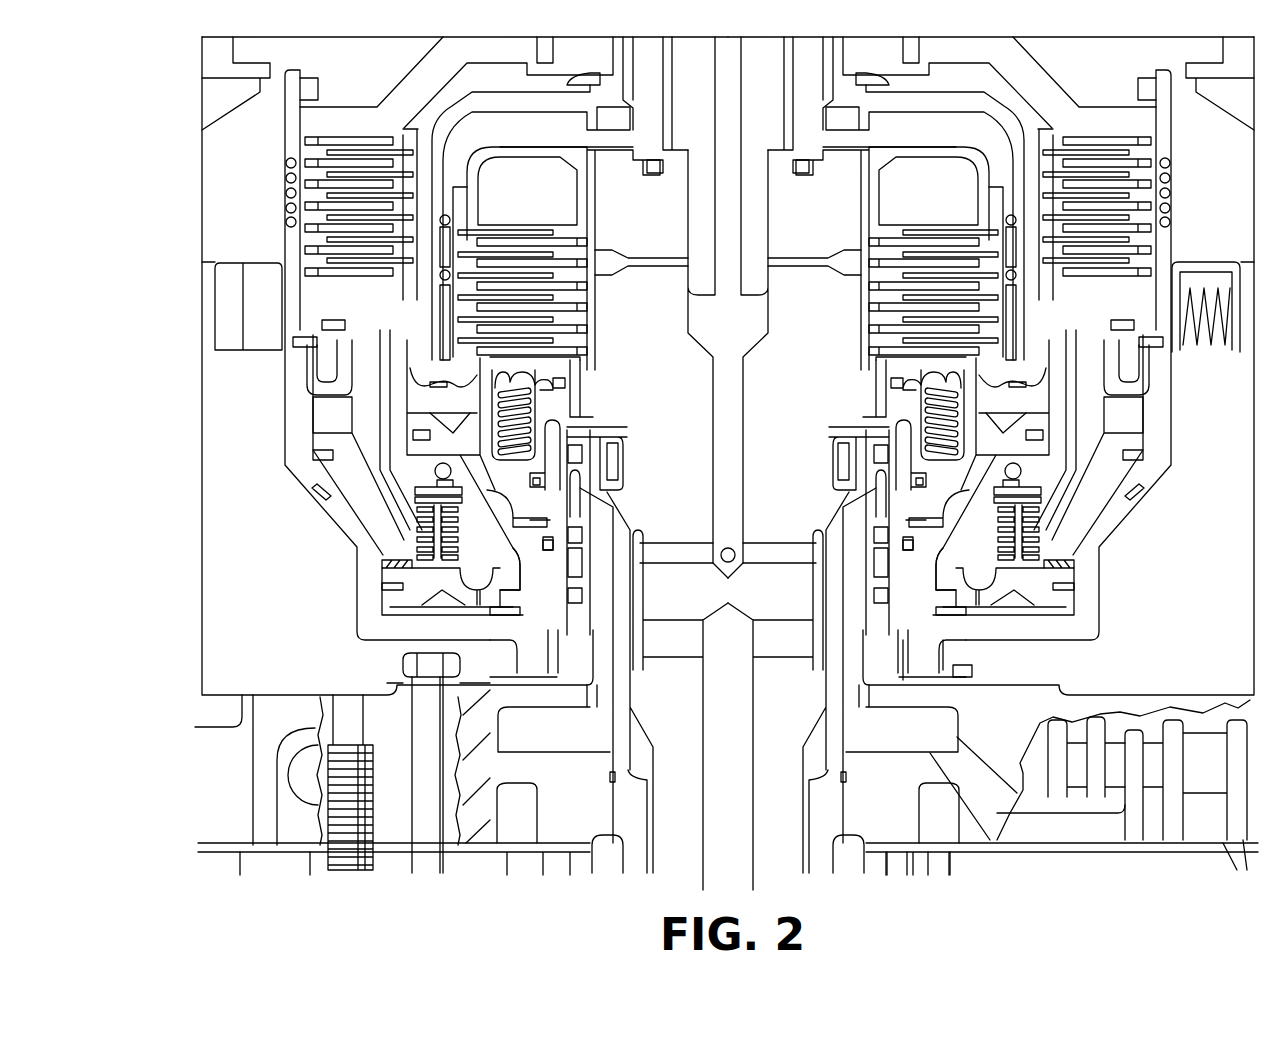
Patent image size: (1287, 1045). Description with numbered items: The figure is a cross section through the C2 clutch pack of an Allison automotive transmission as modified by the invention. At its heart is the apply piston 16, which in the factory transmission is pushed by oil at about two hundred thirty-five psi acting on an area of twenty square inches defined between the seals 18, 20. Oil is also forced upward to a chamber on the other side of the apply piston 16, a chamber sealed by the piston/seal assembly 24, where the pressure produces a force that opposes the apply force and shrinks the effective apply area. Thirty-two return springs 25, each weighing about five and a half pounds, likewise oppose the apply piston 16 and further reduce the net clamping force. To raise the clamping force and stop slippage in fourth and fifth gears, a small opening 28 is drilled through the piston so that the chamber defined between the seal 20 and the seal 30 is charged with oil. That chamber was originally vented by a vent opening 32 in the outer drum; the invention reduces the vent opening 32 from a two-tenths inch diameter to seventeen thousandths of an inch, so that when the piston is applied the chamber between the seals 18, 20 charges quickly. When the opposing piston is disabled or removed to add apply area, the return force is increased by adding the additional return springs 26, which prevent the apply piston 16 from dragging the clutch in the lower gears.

The apply piston 16 is at (500, 617).
The seal 18 is at (517, 590).
The seal 20 is at (382, 590).
The piston/seal assembly 24 is at (333, 330).
The return springs 25 is at (327, 162).
The additional return springs 26 is at (460, 527).
The opening 28 is at (382, 564).
The seal 30 is at (313, 455).
The vent opening 32 is at (316, 497).